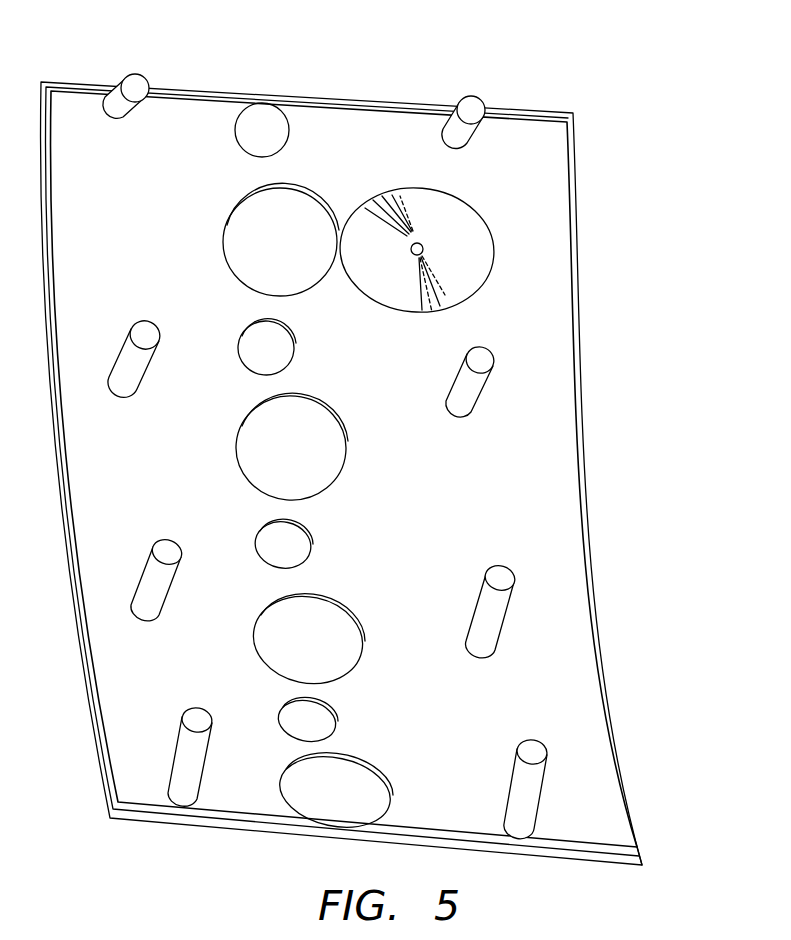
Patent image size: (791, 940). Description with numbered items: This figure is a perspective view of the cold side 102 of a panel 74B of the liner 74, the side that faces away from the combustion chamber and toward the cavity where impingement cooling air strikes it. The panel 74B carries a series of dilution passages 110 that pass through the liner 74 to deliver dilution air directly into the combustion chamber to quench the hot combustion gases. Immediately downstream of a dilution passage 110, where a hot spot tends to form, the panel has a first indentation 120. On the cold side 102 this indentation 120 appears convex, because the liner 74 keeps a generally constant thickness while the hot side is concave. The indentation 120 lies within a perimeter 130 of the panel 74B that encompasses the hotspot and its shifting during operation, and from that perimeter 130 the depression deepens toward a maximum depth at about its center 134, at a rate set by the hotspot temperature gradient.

The inner liner 74 is at (389, 440).
The aft panel 74B is at (555, 111).
The cold side 102 is at (378, 125).
The dilution passage 110 is at (303, 253).
The first indentation 120 is at (448, 213).
The perimeter 130 is at (357, 205).
The center 134 is at (423, 247).